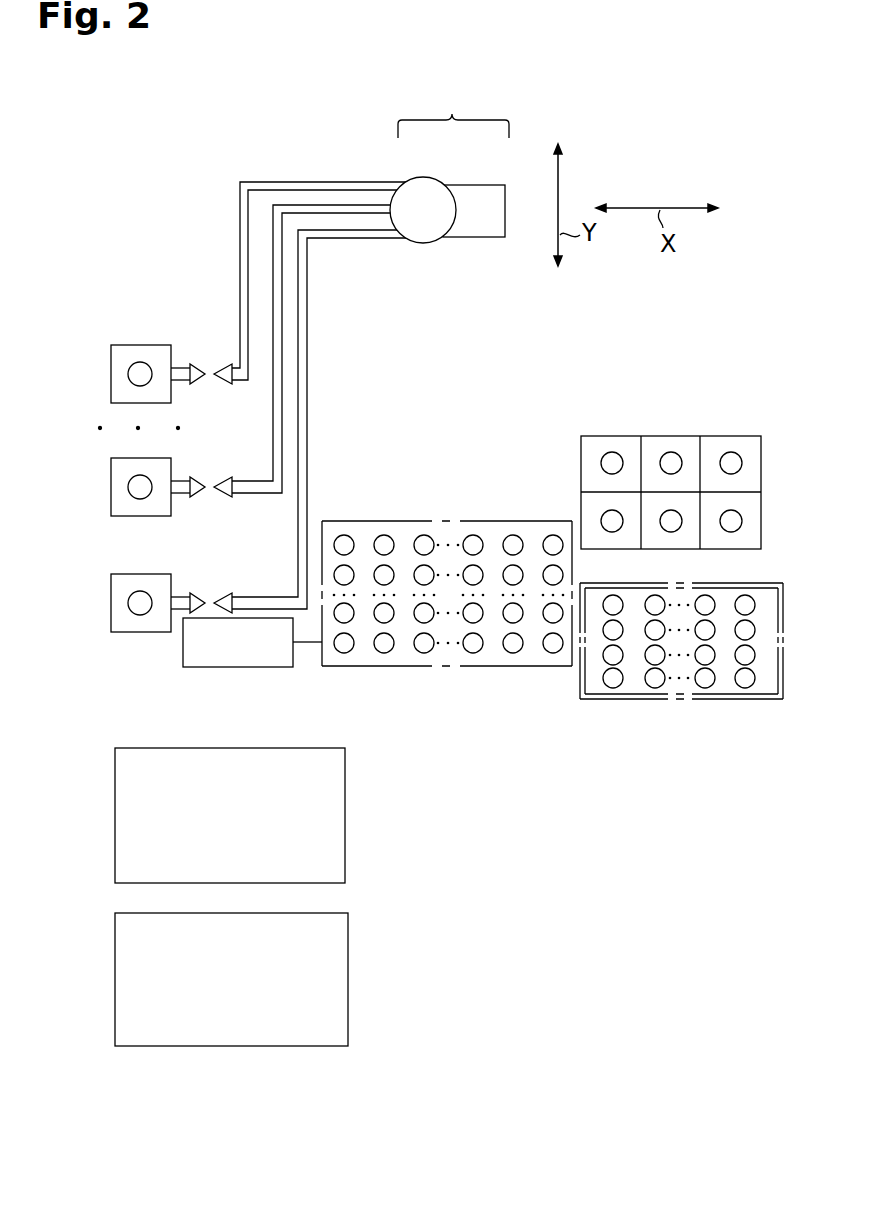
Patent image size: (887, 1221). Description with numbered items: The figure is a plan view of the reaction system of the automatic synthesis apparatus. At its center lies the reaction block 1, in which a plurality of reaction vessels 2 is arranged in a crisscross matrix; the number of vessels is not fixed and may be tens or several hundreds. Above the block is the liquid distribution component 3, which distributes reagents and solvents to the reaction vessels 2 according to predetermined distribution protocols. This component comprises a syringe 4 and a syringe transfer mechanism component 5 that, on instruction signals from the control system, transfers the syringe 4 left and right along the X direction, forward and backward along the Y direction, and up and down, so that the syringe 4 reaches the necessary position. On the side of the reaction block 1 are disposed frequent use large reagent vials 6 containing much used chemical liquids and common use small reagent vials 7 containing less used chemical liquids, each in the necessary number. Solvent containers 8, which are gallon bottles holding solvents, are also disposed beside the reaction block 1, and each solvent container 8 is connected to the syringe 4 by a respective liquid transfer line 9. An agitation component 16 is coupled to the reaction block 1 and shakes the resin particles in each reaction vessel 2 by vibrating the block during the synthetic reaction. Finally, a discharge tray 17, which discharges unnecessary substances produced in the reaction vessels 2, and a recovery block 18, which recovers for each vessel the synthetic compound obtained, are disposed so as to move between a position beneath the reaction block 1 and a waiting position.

The reaction block 1 is at (447, 588).
The reaction vessels 2 is at (377, 568).
The liquid distribution component 3 is at (452, 110).
The syringe 4 is at (423, 243).
The syringe transfer mechanism component 5 is at (482, 185).
The frequent use large reagent vials 6 is at (611, 452).
The common use small reagent vials 7 is at (621, 685).
The solvent containers 8 is at (150, 345).
The liquid transfer lines 9 is at (330, 182).
The agitation component 16 is at (181, 668).
The discharge tray 17 is at (345, 817).
The recovery block 18 is at (348, 978).